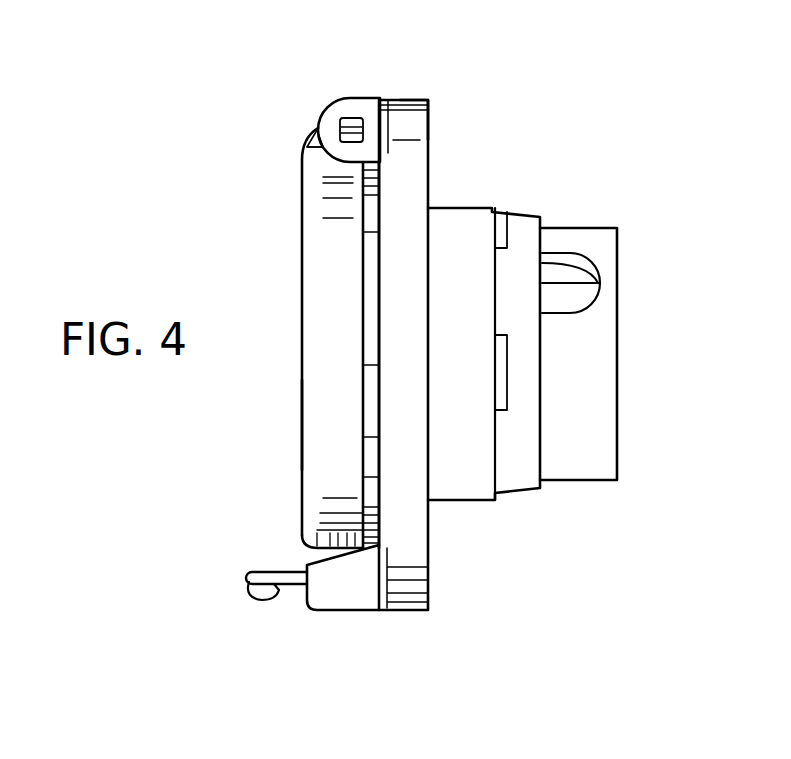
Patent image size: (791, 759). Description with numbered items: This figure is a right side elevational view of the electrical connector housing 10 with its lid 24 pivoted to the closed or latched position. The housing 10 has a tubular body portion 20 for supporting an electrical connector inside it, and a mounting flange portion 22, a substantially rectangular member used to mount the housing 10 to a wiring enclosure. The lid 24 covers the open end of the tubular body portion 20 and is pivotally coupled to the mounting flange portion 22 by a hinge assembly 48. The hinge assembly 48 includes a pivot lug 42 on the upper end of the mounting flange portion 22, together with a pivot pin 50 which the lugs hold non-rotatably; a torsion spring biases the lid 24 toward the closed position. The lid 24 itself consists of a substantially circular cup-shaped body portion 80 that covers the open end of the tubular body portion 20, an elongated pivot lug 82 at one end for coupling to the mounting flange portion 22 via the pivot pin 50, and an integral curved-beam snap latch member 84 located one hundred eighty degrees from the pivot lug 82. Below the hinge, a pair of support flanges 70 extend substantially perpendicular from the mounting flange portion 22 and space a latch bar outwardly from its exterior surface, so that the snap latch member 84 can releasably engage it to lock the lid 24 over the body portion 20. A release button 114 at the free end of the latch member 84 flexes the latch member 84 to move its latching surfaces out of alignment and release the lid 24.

The electrical connector housing 10 is at (262, 154).
The tubular body portion 20 is at (541, 203).
The mounting flange portion 22 is at (436, 94).
The lid 24 is at (295, 287).
The pivot lug 42 is at (373, 93).
The hinge assembly 48 is at (360, 87).
The pivot pin 50 is at (342, 128).
The support flange 70 is at (362, 612).
The cup-shaped body portion 80 is at (302, 422).
The pivot lug 82 is at (318, 128).
The snap latch member 84 is at (270, 564).
The release button 114 is at (253, 600).